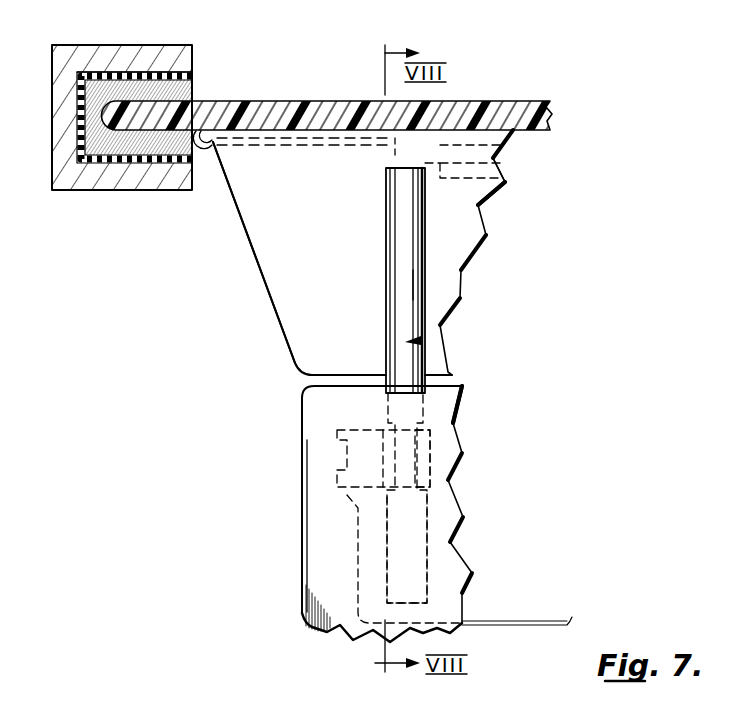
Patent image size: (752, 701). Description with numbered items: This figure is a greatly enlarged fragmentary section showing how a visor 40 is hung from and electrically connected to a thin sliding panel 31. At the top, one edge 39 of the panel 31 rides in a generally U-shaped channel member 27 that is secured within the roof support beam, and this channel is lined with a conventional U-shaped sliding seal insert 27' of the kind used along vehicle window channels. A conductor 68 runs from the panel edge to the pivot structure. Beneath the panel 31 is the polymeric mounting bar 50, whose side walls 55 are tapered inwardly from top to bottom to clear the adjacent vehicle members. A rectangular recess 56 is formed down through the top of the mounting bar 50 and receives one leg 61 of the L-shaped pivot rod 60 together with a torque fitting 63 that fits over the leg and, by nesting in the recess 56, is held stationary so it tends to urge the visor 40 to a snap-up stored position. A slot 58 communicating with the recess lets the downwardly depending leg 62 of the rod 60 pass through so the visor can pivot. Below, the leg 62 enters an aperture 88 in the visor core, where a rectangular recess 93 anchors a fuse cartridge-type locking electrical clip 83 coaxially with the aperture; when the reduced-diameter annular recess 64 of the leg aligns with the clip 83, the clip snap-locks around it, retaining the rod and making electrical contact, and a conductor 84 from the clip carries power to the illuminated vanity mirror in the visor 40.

The U-shaped channel member 27 is at (121, 146).
The U-shaped sliding seal insert 27' is at (168, 66).
The panel edge 39 is at (122, 190).
The panel 31 is at (483, 108).
The conductor 68 is at (210, 147).
The mounting bar 50 is at (262, 323).
The side walls 55 is at (247, 250).
The slot 58 is at (386, 253).
The depending leg 62 is at (413, 280).
The L-shaped pivot rod 60 is at (418, 339).
The rod leg 61 is at (505, 155).
The torque fitting 63 is at (523, 181).
The rectangular recess 56 is at (468, 182).
The visor 40 is at (298, 529).
The annular recess 64 is at (430, 431).
The rectangular recess 93 is at (337, 458).
The locking electrical clip 83 is at (432, 452).
The aperture 88 is at (430, 532).
The conductor 84 is at (352, 548).